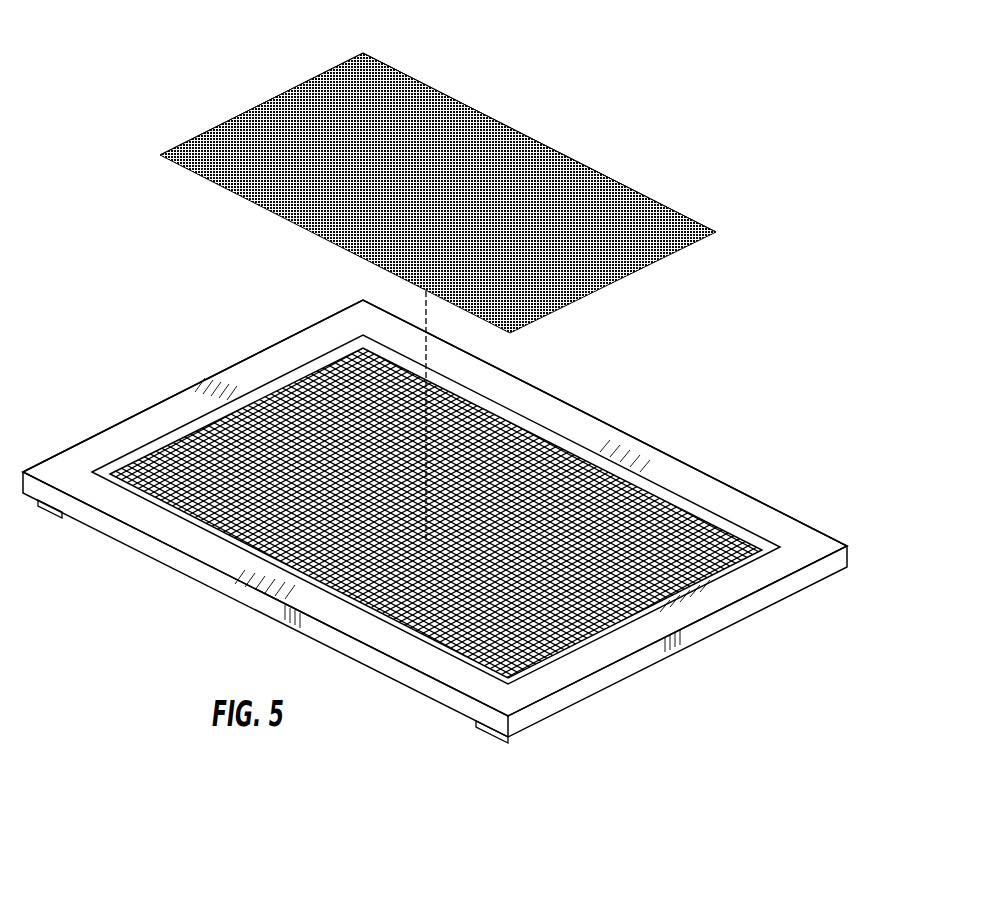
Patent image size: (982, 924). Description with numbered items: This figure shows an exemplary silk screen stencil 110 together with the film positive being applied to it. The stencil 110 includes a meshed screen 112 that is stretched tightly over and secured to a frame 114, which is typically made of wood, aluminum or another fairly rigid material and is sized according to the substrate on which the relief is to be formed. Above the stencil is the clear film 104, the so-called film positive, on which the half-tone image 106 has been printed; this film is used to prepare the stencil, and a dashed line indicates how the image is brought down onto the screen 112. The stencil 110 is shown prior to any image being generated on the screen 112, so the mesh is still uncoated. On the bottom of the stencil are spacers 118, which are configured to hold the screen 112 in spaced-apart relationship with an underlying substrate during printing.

The clear film 104 is at (433, 79).
The half-tone image 106 is at (482, 112).
The silk screen stencil 110 is at (565, 395).
The screen 112 is at (606, 500).
The frame 114 is at (737, 498).
The spacers 118 is at (42, 505).